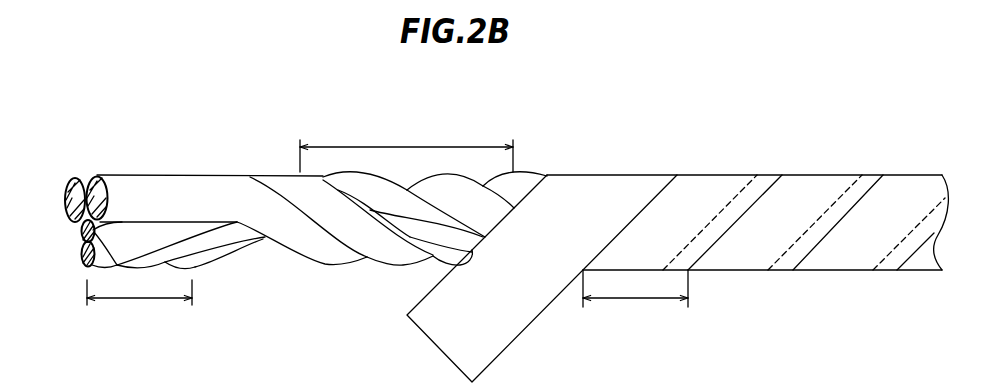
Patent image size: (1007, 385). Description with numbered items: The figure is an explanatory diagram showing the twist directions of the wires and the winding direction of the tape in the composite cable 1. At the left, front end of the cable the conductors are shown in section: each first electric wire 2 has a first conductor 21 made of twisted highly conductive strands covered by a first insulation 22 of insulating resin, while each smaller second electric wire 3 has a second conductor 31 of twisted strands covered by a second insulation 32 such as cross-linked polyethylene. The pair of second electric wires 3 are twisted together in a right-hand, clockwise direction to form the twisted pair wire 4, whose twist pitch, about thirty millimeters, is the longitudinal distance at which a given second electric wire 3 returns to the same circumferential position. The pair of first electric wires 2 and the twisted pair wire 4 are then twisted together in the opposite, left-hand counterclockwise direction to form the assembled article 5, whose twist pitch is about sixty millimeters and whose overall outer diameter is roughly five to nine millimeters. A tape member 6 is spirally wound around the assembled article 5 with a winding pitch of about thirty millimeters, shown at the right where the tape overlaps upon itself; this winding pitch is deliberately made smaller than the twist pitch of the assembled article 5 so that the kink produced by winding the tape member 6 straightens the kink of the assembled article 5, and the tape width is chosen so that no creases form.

The composite cable 1 is at (868, 135).
The first electric wire 2 is at (90, 177).
The first conductor 21 is at (73, 180).
The first insulation 22 is at (89, 180).
The second electric wire 3 is at (202, 237).
The second conductor 31 is at (84, 259).
The second insulation 32 is at (102, 250).
The twisted pair wire 4 is at (266, 253).
The assembled article 5 is at (248, 165).
The tape member 6 is at (843, 263).